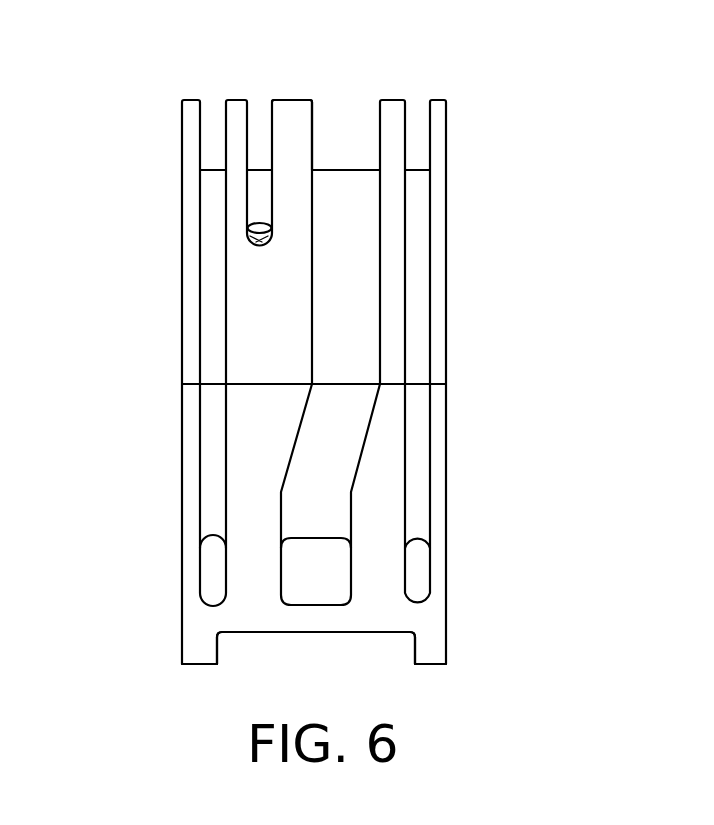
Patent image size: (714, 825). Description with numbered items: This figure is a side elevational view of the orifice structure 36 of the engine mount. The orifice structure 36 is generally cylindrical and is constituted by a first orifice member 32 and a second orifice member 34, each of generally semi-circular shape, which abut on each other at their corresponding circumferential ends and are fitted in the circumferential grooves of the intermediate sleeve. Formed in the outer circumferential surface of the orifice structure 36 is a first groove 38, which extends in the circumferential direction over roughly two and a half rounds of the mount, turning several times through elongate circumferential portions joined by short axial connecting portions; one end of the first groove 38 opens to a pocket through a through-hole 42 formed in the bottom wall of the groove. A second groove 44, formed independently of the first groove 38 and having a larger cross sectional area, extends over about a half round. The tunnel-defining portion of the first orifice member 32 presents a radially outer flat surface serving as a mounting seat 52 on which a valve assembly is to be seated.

The first orifice member 32 is at (486, 500).
The second orifice member 34 is at (484, 237).
The orifice structure 36 is at (308, 373).
The first groove 38 is at (201, 295).
The through-hole 42 is at (250, 232).
The second groove 44 is at (312, 137).
The mounting seat 52 is at (272, 632).